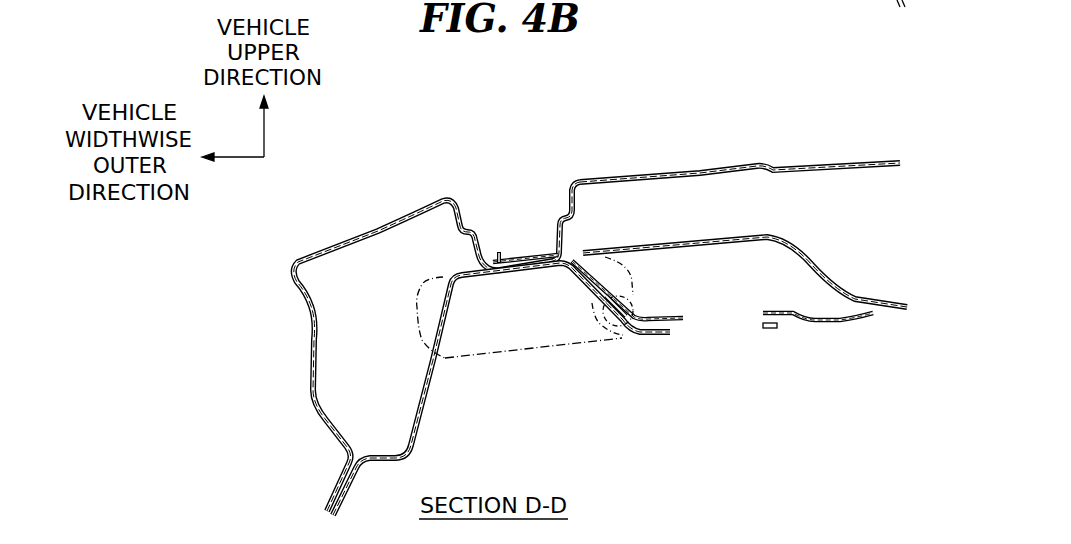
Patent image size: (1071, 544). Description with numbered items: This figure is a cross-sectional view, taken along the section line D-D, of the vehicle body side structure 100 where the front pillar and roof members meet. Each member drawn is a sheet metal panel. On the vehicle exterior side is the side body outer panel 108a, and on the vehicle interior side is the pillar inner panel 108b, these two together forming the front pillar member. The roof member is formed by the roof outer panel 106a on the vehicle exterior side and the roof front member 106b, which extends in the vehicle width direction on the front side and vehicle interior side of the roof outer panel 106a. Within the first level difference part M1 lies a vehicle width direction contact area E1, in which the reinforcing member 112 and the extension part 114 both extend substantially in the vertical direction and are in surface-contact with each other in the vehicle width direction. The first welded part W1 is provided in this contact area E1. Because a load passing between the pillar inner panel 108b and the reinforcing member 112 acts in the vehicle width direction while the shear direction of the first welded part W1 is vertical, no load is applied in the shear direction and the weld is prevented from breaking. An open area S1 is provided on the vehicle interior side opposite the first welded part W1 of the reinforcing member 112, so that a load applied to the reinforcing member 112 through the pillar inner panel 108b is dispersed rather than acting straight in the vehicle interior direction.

The vehicle body side structure 100 is at (408, 175).
The roof outer panel 106a is at (833, 164).
The roof front member 106b is at (820, 273).
The side body outer panel 108a is at (313, 355).
The pillar inner panel 108b is at (413, 440).
The reinforcing member 112 is at (686, 308).
The extension part 114 is at (509, 273).
The first welded part W1 is at (637, 295).
The vehicle width direction contact area E1 is at (593, 306).
The first level difference part M1 is at (500, 358).
The open area S1 is at (850, 300).